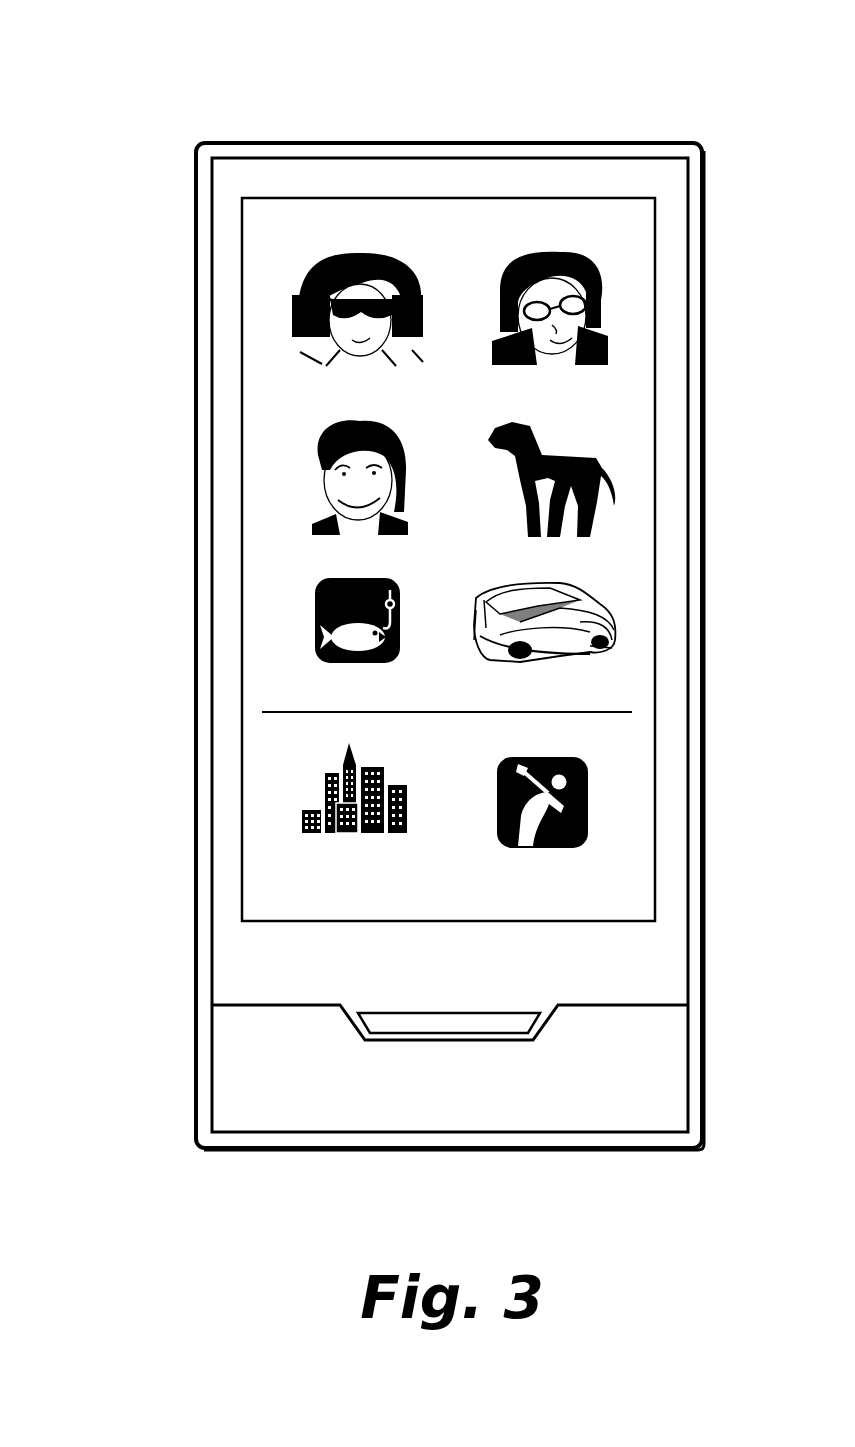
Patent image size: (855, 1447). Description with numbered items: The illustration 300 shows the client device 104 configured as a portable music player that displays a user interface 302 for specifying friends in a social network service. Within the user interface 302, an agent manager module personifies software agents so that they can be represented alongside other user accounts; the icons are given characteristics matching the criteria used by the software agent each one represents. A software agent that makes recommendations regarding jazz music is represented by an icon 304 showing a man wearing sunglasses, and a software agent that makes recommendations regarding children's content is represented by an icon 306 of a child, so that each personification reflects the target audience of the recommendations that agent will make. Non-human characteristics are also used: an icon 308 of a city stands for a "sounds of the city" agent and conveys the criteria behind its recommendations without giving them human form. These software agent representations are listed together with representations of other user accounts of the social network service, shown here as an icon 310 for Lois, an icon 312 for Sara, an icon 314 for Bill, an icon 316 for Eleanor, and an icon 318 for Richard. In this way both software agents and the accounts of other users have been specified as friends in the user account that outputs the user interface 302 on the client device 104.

The illustration 300 is at (156, 72).
The client device 104 is at (672, 143).
The user interface 302 is at (448, 559).
The icon 304 is at (516, 266).
The icon 306 is at (378, 428).
The icon 308 is at (387, 790).
The icon 310 is at (338, 275).
The icon 312 is at (543, 462).
The icon 314 is at (397, 590).
The icon 316 is at (566, 604).
The icon 318 is at (541, 757).